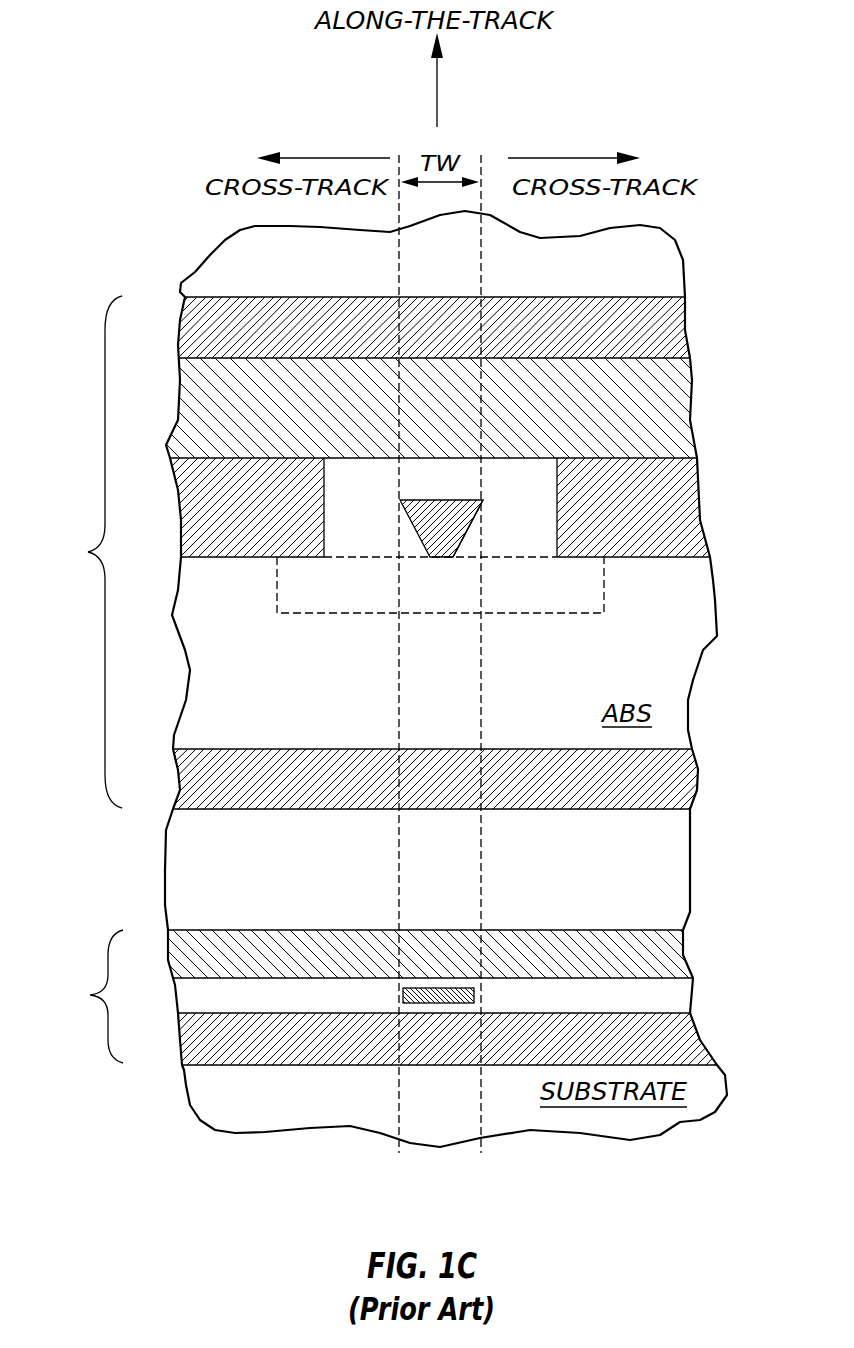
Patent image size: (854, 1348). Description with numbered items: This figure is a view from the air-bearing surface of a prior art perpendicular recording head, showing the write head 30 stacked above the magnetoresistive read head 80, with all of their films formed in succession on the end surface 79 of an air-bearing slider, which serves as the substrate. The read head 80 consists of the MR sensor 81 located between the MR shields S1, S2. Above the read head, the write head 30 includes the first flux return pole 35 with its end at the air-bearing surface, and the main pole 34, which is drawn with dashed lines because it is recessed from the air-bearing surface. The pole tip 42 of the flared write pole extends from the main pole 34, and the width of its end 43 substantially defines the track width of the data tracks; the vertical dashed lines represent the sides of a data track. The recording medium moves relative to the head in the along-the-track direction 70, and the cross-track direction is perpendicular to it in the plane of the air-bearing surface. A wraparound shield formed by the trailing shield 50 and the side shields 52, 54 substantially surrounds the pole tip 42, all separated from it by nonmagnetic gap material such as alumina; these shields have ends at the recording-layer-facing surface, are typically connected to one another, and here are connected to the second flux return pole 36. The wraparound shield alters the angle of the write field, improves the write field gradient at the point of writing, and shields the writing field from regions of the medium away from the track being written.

The along-the-track direction 70 is at (438, 90).
The second flux return pole 36 is at (680, 330).
The trailing shield (TS) 50 is at (680, 415).
The side shield 52 is at (690, 517).
The side shield 54 is at (190, 515).
The pole tip 42 is at (410, 530).
The end of pole tip 43 is at (452, 538).
The main pole 34 is at (590, 595).
The first flux return pole 35 is at (683, 775).
The write head 30 is at (88, 552).
The MR shield S2 is at (675, 955).
The MR sensor 81 is at (476, 996).
The end surface of air-bearing slider 79 is at (560, 1063).
The MR shield S1 is at (690, 1033).
The MR read head 80 is at (85, 996).